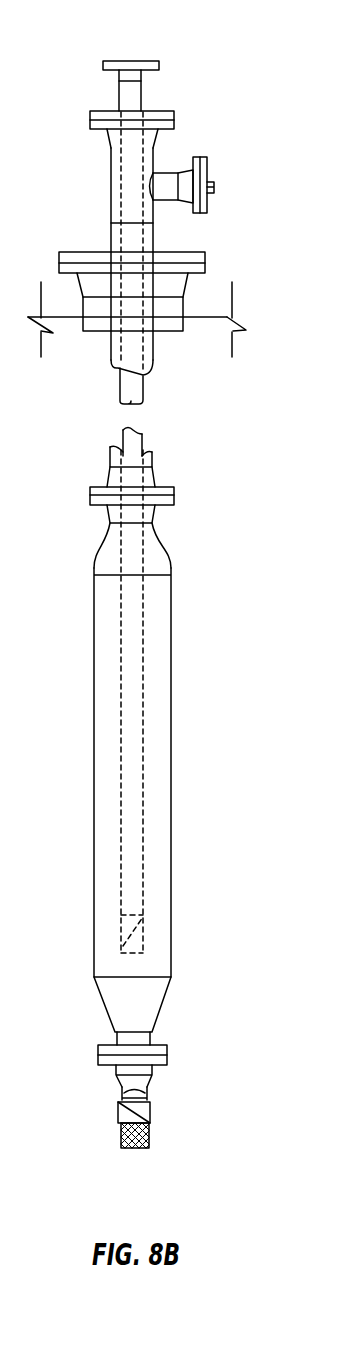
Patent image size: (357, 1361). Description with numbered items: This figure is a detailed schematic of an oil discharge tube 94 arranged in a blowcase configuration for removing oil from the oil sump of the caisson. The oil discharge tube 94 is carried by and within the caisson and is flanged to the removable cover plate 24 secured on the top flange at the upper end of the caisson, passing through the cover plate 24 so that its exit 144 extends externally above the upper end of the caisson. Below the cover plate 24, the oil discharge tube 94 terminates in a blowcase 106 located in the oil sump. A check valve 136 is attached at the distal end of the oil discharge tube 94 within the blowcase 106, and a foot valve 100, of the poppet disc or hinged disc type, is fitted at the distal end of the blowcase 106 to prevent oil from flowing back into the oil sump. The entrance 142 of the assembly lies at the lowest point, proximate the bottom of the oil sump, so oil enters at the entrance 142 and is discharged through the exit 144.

The exit 144 is at (130, 61).
The oil discharge tube 94 is at (141, 102).
The removable cover plate 24 is at (207, 313).
The blowcase 106 is at (172, 784).
The check valve 136 is at (143, 925).
The foot valve 100 is at (150, 1110).
The entrance 142 is at (130, 1148).